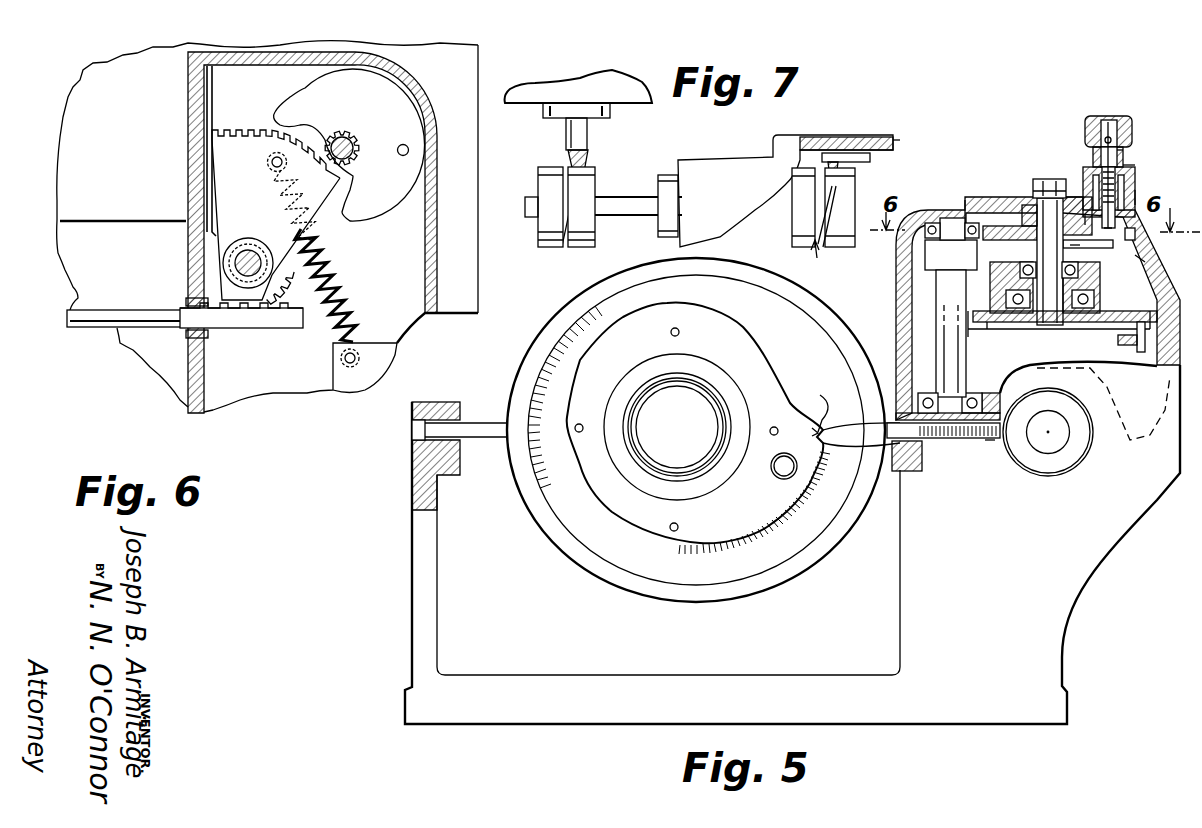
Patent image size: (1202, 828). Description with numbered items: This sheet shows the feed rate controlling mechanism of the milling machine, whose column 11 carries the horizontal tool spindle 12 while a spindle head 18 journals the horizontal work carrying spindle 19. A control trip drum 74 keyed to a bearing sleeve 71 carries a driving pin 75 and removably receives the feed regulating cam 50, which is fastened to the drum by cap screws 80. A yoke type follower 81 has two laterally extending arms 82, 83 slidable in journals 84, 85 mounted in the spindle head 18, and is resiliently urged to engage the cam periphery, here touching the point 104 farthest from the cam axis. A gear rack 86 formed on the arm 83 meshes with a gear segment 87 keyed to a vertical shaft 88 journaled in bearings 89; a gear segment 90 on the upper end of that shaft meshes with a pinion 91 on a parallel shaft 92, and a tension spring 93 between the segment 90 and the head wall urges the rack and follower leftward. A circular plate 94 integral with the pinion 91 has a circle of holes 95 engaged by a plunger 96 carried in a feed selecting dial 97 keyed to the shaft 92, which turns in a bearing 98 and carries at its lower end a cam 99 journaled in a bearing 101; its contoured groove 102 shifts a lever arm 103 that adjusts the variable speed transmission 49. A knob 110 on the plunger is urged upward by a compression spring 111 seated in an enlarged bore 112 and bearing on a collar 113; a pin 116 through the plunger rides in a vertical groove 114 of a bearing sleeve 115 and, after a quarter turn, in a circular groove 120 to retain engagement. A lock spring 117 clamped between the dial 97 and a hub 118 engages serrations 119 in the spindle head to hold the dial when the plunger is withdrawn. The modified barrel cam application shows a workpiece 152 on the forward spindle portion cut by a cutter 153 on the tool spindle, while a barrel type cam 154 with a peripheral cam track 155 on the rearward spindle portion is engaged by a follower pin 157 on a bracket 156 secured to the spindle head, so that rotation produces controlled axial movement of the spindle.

In FIG. 7, the column 11 is at (588, 85).
In FIG. 7, the tool spindle 12 is at (610, 110).
In FIG. 6, the spindle head 18 is at (205, 54).
In FIG. 7, the spindle head 18 is at (702, 172).
In FIG. 7, the work carrying spindle 19 is at (626, 198).
In FIG. 5, the work carrying spindle 19 is at (680, 402).
In FIG. 5, the variable speed transmission 49 is at (1143, 350).
In FIG. 5, the feed regulating cam 50 is at (762, 367).
In FIG. 5, the bearing sleeve 71 is at (634, 445).
In FIG. 5, the control trip drum 74 is at (653, 478).
In FIG. 5, the driving pin 75 is at (782, 470).
In FIG. 5, the cap screws 80 is at (580, 424).
In FIG. 5, the follower 81 is at (518, 365).
In FIG. 5, the follower arm 82 is at (482, 445).
In FIG. 6, the follower arm 83 is at (151, 313).
In FIG. 5, the follower arm 83 is at (986, 445).
In FIG. 5, the journal 84 is at (412, 430).
In FIG. 5, the journal 85 is at (893, 460).
In FIG. 6, the gear rack 86 is at (285, 308).
In FIG. 5, the gear rack 86 is at (990, 440).
In FIG. 6, the gear segment 87 is at (271, 290).
In FIG. 5, the gear segment 87 is at (958, 442).
In FIG. 5, the vertical shaft 88 is at (966, 370).
In FIG. 5, the bearings 89 is at (960, 216).
In FIG. 6, the gear segment 90 is at (237, 157).
In FIG. 5, the gear segment 90 is at (930, 256).
In FIG. 5, the pinion 91 is at (1080, 245).
In FIG. 5, the shaft 92 is at (1050, 179).
In FIG. 6, the tension spring 93 is at (322, 246).
In FIG. 6, the circular plate 94 is at (307, 95).
In FIG. 5, the circular plate 94 is at (1006, 238).
In FIG. 6, the bored holes 95 is at (401, 145).
In FIG. 5, the bored holes 95 is at (1145, 262).
In FIG. 5, the plunger 96 is at (1085, 215).
In FIG. 5, the feed selecting dial 97 is at (985, 205).
In FIG. 5, the bearing 98 is at (1075, 267).
In FIG. 5, the cam 99 is at (1095, 323).
In FIG. 5, the bearing 101 is at (1094, 300).
In FIG. 5, the groove 102 is at (980, 331).
In FIG. 5, the lever arm 103 is at (1137, 346).
In FIG. 5, the point 104 is at (825, 406).
In FIG. 5, the knob 110 is at (1090, 118).
In FIG. 5, the compression spring 111 is at (1118, 182).
In FIG. 5, the enlarged bore 112 is at (1137, 190).
In FIG. 5, the collar 113 is at (1136, 168).
In FIG. 5, the vertical groove 114 is at (1124, 150).
In FIG. 5, the bearing sleeve 115 is at (1096, 156).
In FIG. 5, the pin 116 is at (1109, 120).
In FIG. 5, the spring 117 is at (1136, 238).
In FIG. 5, the hub 118 is at (1028, 206).
In FIG. 5, the serrations 119 is at (965, 200).
In FIG. 5, the circular groove 120 is at (1122, 160).
In FIG. 7, the workpiece 152 is at (543, 178).
In FIG. 7, the cutter 153 is at (584, 162).
In FIG. 7, the barrel type cam 154 is at (792, 229).
In FIG. 7, the peripheral cam track 155 is at (823, 258).
In FIG. 7, the bracket 156 is at (893, 143).
In FIG. 7, the follower pin 157 is at (870, 160).